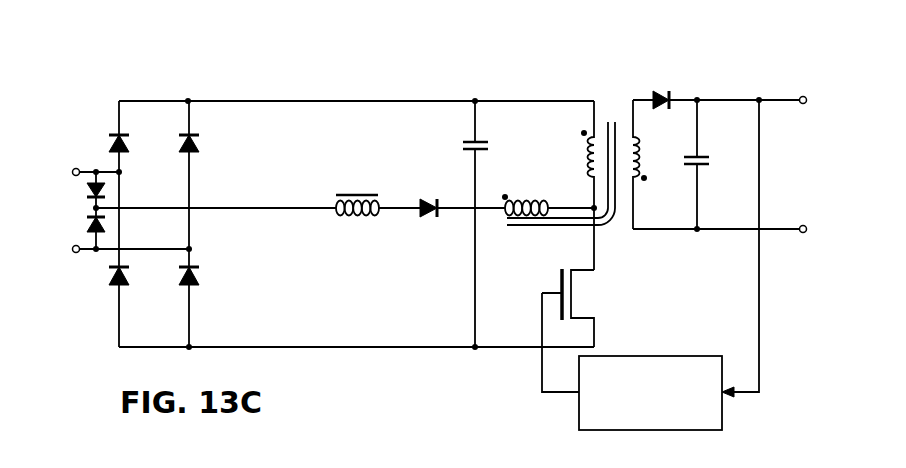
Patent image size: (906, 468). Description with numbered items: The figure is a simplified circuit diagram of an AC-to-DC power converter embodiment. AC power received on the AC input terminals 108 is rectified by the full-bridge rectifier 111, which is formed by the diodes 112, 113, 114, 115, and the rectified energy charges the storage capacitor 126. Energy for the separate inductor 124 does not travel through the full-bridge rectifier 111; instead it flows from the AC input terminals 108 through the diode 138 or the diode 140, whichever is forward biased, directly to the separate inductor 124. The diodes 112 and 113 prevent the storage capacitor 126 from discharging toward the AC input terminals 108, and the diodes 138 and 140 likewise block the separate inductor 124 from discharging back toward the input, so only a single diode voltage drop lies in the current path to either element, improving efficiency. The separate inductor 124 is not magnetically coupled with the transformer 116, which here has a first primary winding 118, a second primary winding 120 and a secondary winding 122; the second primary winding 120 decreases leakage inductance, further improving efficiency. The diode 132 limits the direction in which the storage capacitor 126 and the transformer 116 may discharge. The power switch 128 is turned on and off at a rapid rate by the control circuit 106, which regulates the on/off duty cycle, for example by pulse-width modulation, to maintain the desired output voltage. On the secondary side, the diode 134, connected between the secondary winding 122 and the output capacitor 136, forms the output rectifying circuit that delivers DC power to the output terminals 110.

The control circuit 106 is at (685, 355).
The AC input terminals 108 is at (74, 168).
The DC output terminals 110 is at (804, 96).
The full-bridge rectifier 111 is at (150, 88).
The diode 112 is at (127, 155).
The diode 113 is at (196, 155).
The diode 114 is at (196, 285).
The diode 115 is at (126, 285).
The transformer 116 is at (615, 101).
The first primary winding 118 is at (577, 145).
The second primary winding 120 is at (521, 199).
The secondary winding 122 is at (645, 148).
The separate inductor 124 is at (360, 220).
The storage capacitor 126 is at (465, 154).
The power switch 128 is at (560, 290).
The diode 132 is at (433, 220).
The diode 134 is at (660, 89).
The output capacitor 136 is at (705, 154).
The diode 138 is at (85, 186).
The diode 140 is at (85, 228).